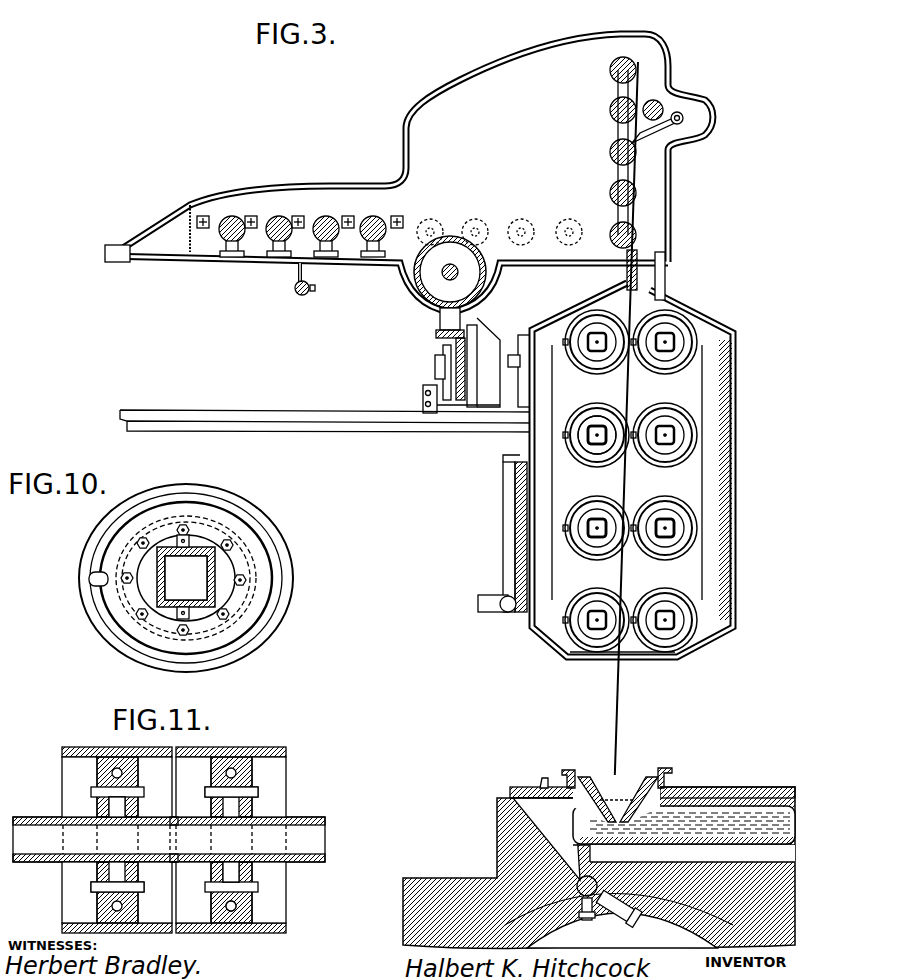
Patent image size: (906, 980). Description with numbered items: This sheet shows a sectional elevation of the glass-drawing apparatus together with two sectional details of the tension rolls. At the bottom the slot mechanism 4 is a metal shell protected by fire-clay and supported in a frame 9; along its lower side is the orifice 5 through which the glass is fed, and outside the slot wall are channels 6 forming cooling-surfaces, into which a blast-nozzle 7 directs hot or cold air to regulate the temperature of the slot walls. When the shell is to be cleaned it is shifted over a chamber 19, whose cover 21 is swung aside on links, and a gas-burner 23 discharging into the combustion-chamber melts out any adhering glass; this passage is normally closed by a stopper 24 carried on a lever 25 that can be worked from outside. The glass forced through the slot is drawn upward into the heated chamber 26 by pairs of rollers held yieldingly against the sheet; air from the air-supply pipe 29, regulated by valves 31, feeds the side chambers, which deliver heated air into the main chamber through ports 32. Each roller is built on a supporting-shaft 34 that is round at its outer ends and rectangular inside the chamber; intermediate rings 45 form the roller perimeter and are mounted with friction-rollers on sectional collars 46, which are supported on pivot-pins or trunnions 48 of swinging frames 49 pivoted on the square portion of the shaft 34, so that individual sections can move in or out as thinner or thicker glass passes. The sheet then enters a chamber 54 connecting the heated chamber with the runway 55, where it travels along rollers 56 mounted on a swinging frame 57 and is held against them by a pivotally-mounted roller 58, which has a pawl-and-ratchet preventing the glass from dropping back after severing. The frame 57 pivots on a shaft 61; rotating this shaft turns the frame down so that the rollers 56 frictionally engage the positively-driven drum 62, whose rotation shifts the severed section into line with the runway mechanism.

In FIG. 3, the slot mechanism 4 is at (578, 782).
In FIG. 3, the orifice 5 is at (590, 820).
In FIG. 3, the channels 6 is at (640, 812).
In FIG. 3, the blast-nozzle 7 is at (640, 777).
In FIG. 3, the frame 9 is at (672, 772).
In FIG. 3, the chamber 19 is at (525, 810).
In FIG. 3, the cover 21 is at (522, 788).
In FIG. 3, the gas-burner 23 is at (618, 919).
In FIG. 3, the stopper 24 is at (588, 878).
In FIG. 3, the lever 25 is at (575, 923).
In FIG. 3, the chamber 26 is at (692, 383).
In FIG. 3, the air-supply pipe 29 is at (500, 557).
In FIG. 3, the valves 31 is at (478, 603).
In FIG. 3, the ports 32 is at (598, 662).
In FIG. 3, the supporting-shafts 34 is at (584, 444).
In FIG. 10, the supporting-shafts 34 is at (176, 580).
In FIG. 11, the supporting-shafts 34 is at (40, 820).
In FIG. 3, the intermediate rings 45 is at (600, 368).
In FIG. 10, the intermediate rings 45 is at (246, 508).
In FIG. 11, the intermediate rings 45 is at (78, 748).
In FIG. 3, the collars 46 is at (667, 424).
In FIG. 11, the collars 46 is at (260, 805).
In FIG. 10, the pivot-pins or trunnions 48 is at (180, 540).
In FIG. 11, the pivot-pins or trunnions 48 is at (100, 800).
In FIG. 3, the swinging frames 49 is at (600, 448).
In FIG. 10, the swinging frames 49 is at (214, 568).
In FIG. 11, the swinging frames 49 is at (195, 870).
In FIG. 3, the chamber 54 is at (499, 192).
In FIG. 3, the runway 55 is at (283, 197).
In FIG. 3, the rollers 56 is at (610, 72).
In FIG. 3, the swinging frame 57 is at (616, 133).
In FIG. 3, the pivotally-mounted roller 58 is at (662, 104).
In FIG. 3, the shaft 61 is at (632, 232).
In FIG. 3, the drum 62 is at (435, 283).